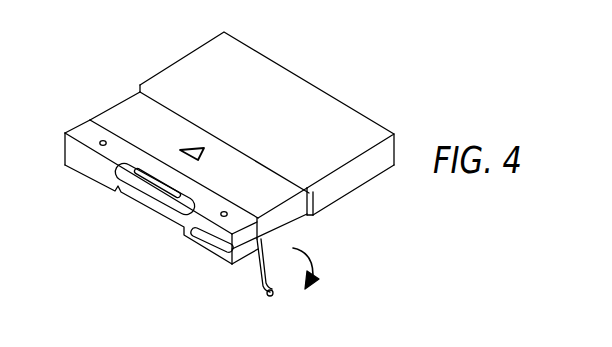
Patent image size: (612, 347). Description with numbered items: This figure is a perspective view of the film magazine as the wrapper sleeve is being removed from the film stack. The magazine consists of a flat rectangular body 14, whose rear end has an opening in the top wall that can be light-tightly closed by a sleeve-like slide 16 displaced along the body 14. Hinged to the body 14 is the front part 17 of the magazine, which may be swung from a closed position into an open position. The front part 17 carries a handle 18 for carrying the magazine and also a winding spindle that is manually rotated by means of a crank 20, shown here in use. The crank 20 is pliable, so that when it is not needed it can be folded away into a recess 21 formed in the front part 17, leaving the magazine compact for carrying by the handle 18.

The body 14 is at (294, 216).
The sleeve-like slide 16 is at (370, 178).
The front part 17 is at (90, 178).
The handle 18 is at (153, 207).
The crank 20 is at (256, 283).
The recess 21 is at (212, 236).